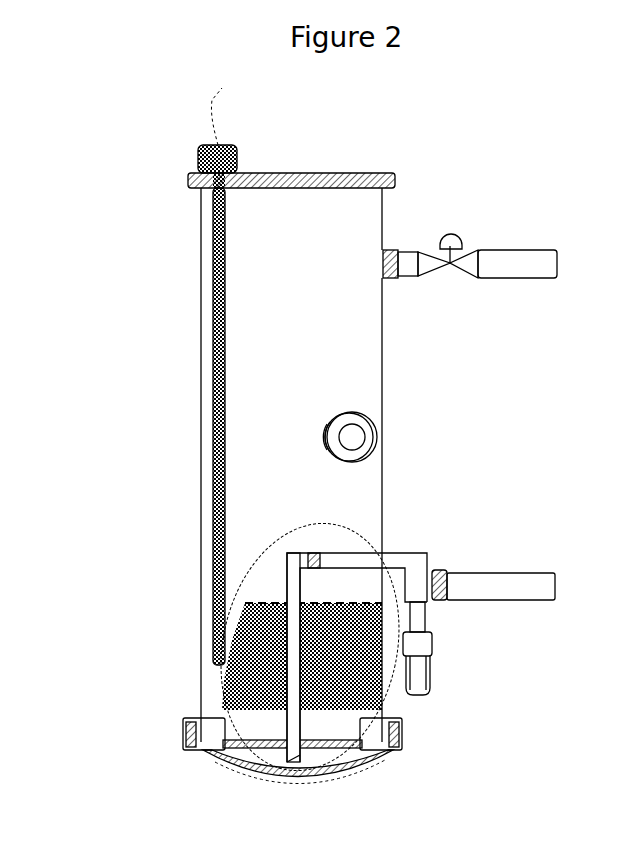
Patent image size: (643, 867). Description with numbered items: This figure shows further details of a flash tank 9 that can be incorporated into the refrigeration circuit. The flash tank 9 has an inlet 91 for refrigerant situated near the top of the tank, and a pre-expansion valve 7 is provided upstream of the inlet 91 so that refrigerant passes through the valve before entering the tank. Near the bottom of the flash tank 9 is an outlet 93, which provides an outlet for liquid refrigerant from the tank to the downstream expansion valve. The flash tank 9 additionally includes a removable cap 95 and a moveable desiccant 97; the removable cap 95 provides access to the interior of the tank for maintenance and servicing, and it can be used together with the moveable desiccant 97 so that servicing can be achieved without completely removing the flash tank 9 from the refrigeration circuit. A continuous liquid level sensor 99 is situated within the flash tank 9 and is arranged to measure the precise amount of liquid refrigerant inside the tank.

The flash tank 9 is at (156, 345).
The continuous liquid level sensor 99 is at (215, 490).
The inlet 91 is at (410, 278).
The pre-expansion valve 7 is at (470, 268).
The moveable desiccant 97 is at (357, 662).
The outlet 93 is at (443, 590).
The removable cap 95 is at (350, 775).